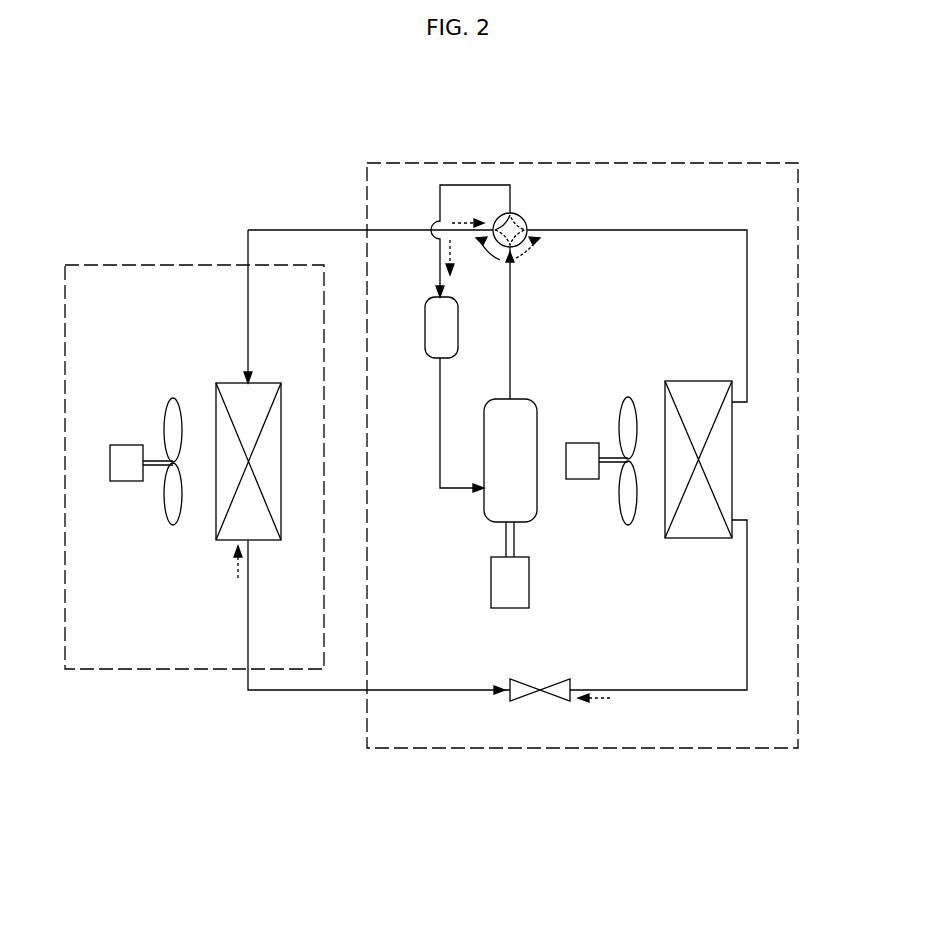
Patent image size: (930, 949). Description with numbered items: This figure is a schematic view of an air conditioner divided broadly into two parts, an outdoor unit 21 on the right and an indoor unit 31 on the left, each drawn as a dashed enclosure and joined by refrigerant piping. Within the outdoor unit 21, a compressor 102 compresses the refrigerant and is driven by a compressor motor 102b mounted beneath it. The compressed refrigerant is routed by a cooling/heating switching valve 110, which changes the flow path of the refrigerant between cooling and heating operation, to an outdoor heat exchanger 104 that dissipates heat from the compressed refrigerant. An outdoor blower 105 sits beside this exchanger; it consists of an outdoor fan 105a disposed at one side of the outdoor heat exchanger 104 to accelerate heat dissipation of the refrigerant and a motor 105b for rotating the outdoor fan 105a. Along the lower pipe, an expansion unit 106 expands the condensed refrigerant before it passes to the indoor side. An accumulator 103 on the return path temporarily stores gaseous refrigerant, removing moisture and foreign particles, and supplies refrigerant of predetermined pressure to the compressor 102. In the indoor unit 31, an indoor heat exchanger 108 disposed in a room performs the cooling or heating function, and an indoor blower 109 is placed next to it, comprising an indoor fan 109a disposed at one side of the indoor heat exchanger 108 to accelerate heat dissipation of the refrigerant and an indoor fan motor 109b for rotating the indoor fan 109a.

The outdoor unit 21 is at (625, 749).
The indoor unit 31 is at (207, 670).
The compressor 102 is at (508, 495).
The compressor motor 102b is at (529, 581).
The accumulator 103 is at (425, 338).
The outdoor heat exchanger 104 is at (712, 450).
The outdoor blower 105 is at (592, 411).
The outdoor fan 105a is at (626, 410).
The motor 105b is at (582, 452).
The expansion unit 106 is at (557, 702).
The indoor heat exchanger 108 is at (255, 528).
The indoor blower 109 is at (121, 583).
The indoor fan 109a is at (173, 512).
The indoor fan motor 109b is at (122, 472).
The cooling/heating switching valve 110 is at (523, 216).